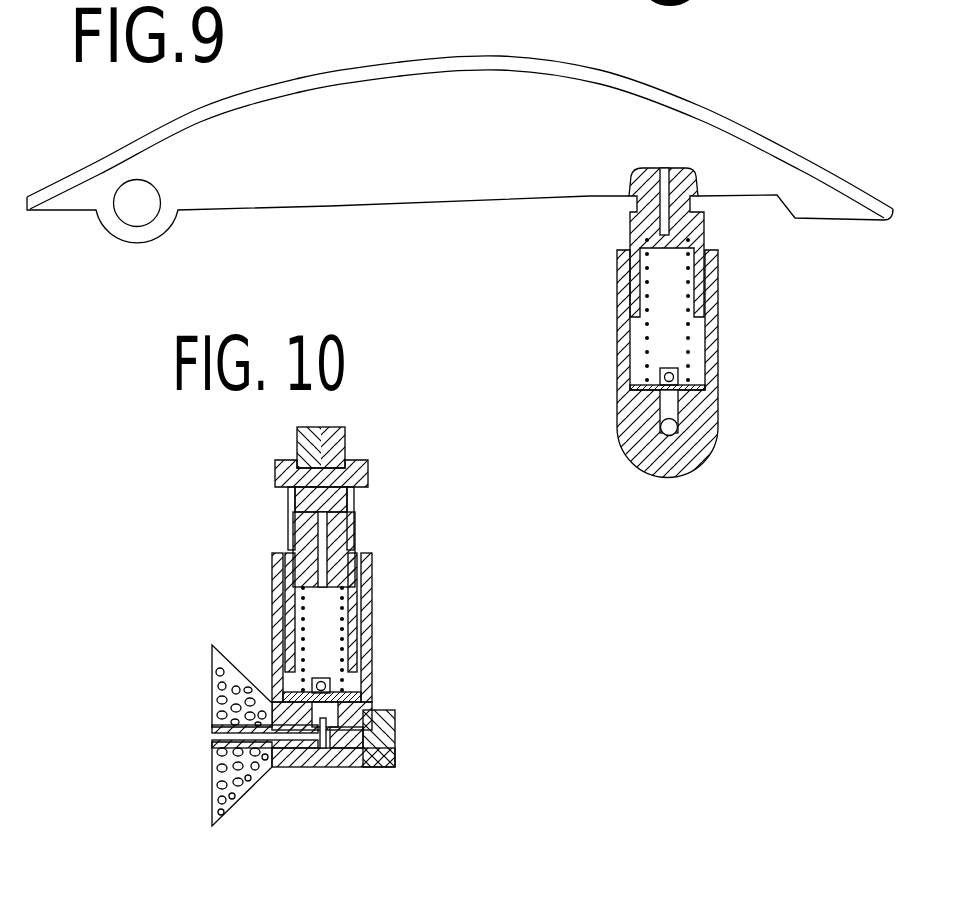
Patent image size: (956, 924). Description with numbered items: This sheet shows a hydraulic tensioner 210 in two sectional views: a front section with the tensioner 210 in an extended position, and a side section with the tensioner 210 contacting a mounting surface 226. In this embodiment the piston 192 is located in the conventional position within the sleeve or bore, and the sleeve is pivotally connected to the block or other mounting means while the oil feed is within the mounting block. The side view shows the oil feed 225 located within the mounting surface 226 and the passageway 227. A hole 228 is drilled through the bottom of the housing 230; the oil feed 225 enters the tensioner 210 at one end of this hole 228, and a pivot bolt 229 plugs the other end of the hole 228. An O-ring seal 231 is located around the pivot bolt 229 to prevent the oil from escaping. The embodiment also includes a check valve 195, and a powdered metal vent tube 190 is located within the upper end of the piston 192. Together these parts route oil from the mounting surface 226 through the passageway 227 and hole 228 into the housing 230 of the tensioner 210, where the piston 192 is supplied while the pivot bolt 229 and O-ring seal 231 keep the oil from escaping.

In FIG. 10, the powdered metal vent tube 190 is at (314, 539).
In FIG. 10, the piston 192 is at (343, 580).
In FIG. 10, the check valve 195 is at (347, 696).
In FIG. 9, the tensioner 210 is at (605, 286).
In FIG. 10, the tensioner 210 is at (263, 578).
In FIG. 10, the oil feed 225 is at (214, 735).
In FIG. 10, the mounting surface 226 is at (212, 662).
In FIG. 10, the passageway 227 is at (322, 748).
In FIG. 10, the hole 228 is at (315, 748).
In FIG. 10, the pivot bolt 229 is at (397, 762).
In FIG. 10, the housing 230 is at (272, 624).
In FIG. 10, the O-ring seal 231 is at (373, 755).